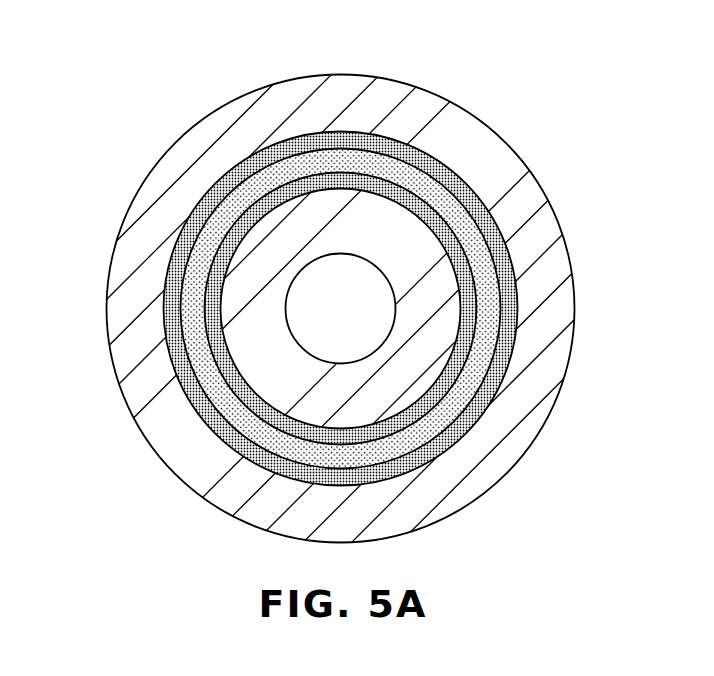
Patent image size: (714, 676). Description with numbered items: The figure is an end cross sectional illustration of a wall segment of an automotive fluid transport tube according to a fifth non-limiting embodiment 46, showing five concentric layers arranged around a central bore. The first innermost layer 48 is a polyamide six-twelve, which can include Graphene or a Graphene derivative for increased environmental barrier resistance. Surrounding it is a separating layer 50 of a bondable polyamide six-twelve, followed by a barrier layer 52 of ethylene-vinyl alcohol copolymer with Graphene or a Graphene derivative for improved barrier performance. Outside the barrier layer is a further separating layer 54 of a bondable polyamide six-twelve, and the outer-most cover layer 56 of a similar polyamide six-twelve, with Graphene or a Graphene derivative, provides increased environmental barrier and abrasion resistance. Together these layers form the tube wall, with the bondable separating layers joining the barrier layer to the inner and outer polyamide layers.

The fifth non-limiting embodiment 46 is at (150, 100).
The outer-most cover layer 56 is at (116, 227).
The further separating layer 54 is at (167, 285).
The barrier layer 52 is at (187, 327).
The separating layer 50 is at (207, 343).
The first innermost layer 48 is at (251, 374).